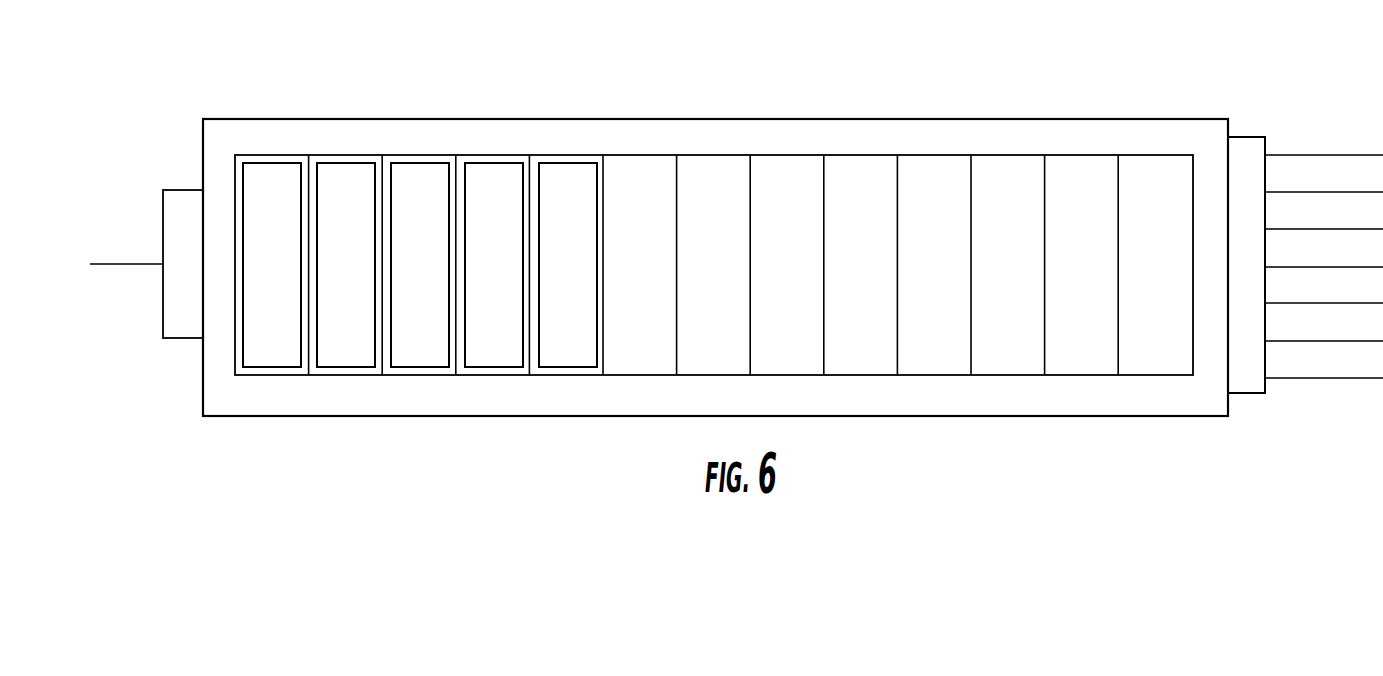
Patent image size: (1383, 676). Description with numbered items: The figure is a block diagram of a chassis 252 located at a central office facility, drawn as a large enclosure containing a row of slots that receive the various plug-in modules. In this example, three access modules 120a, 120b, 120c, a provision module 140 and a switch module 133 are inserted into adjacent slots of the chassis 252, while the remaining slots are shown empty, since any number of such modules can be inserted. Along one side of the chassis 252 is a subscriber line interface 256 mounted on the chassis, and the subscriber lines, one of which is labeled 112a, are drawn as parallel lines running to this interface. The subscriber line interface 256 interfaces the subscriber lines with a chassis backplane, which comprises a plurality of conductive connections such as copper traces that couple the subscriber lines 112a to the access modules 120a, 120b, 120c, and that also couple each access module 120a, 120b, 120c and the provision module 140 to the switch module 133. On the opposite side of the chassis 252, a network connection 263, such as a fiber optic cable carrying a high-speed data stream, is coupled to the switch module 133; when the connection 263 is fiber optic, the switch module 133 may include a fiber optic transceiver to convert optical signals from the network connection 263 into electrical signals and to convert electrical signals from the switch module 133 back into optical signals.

The chassis 252 is at (820, 119).
The network connection 263 is at (107, 264).
The subscriber line interface 256 is at (1247, 137).
The subscriber line 112a is at (1283, 133).
The access module 120a is at (258, 163).
The access module 120b is at (331, 163).
The access module 120c is at (405, 163).
The provision module 140 is at (480, 163).
The switch module 133 is at (553, 163).